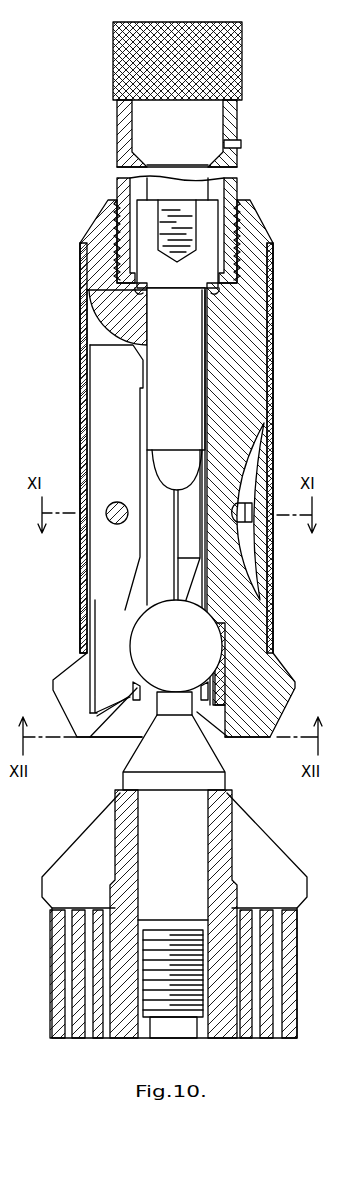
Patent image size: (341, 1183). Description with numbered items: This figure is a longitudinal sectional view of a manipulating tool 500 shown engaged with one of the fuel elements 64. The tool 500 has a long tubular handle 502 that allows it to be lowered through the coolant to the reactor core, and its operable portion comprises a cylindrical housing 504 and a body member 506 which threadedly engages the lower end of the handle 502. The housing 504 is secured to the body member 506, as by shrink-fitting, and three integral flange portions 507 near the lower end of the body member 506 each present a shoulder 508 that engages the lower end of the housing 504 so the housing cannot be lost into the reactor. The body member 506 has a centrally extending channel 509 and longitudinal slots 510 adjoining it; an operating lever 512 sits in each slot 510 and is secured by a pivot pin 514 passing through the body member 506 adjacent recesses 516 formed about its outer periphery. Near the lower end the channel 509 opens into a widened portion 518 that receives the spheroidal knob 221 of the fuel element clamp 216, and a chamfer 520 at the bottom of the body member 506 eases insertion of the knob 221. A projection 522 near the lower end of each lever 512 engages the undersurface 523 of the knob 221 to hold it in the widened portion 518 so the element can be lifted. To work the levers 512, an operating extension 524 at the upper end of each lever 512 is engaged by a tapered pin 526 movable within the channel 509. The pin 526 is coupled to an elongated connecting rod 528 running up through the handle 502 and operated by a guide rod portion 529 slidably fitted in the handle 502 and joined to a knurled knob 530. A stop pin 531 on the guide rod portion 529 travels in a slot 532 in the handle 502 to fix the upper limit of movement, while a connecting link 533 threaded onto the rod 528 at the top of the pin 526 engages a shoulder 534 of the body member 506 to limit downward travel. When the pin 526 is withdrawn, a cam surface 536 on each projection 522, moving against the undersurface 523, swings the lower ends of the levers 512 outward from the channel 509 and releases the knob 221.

The fuel element 64 is at (178, 914).
The fuel element clamp 216 is at (222, 774).
The spheroidal knob 221 is at (176, 646).
The tool 500 is at (195, 448).
The tubular handle 502 is at (117, 185).
The cylindrical housing 504 is at (270, 403).
The body member 506 is at (254, 283).
The flange portions 507 is at (56, 674).
The shoulder 508 is at (202, 490).
The channel 509 is at (153, 583).
The slots 510 is at (100, 321).
The operating lever 512 is at (188, 540).
The pivot pin 514 is at (126, 496).
The recesses 516 is at (262, 553).
The widened portion 518 is at (226, 687).
The chamfer 520 is at (103, 737).
The projection 522 is at (120, 688).
The undersurface 523 is at (185, 674).
The operating extension 524 is at (143, 378).
The tapered pin 526 is at (176, 445).
The connecting rod 528 is at (205, 185).
The guide rod portion 529 is at (117, 125).
The knurled knob 530 is at (242, 62).
The stop pin 531 is at (239, 144).
The slot 532 is at (223, 120).
The connecting link 533 is at (205, 218).
The shoulder 534 is at (211, 294).
The cam surface 536 is at (133, 676).